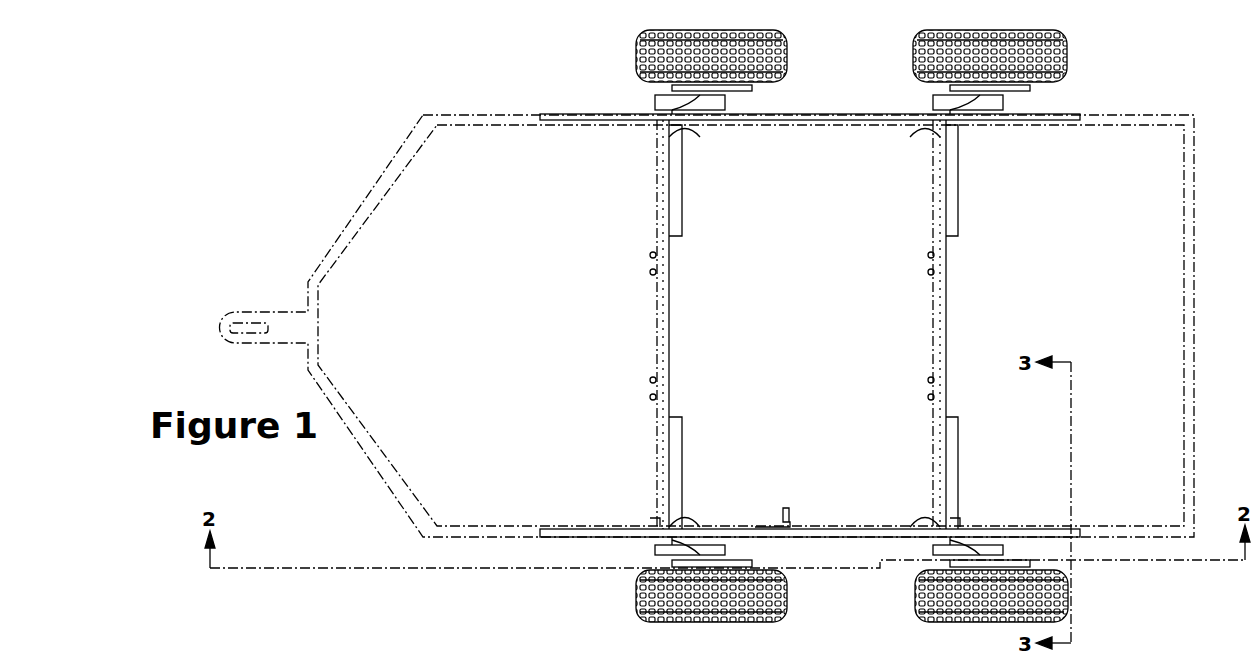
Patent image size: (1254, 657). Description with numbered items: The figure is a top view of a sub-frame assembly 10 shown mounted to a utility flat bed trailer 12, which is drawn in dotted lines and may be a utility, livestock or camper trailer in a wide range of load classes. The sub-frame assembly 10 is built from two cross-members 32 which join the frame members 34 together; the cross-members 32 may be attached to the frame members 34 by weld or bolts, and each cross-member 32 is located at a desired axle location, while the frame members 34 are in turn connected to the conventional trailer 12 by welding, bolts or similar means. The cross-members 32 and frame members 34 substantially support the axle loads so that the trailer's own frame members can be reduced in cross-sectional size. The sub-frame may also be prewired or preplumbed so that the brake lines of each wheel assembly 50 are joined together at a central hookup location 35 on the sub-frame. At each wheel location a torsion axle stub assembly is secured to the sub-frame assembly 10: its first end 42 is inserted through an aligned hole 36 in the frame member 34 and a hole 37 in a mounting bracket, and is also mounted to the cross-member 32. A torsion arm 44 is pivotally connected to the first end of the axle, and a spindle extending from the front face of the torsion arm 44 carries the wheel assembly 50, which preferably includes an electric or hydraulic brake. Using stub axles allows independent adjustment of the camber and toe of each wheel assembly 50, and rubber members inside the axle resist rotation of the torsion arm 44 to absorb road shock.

The sub-frame assembly 10 is at (960, 378).
The utility flat bed trailer 12 is at (1195, 217).
The cross-member 32 is at (668, 358).
The frame member 34 is at (1020, 125).
The central hookup location 35 is at (790, 512).
The hole 36 is at (687, 512).
The hole 37 is at (955, 537).
The first end 42 is at (680, 458).
The torsion arm 44 is at (720, 550).
The wheel assembly 50 is at (775, 45).